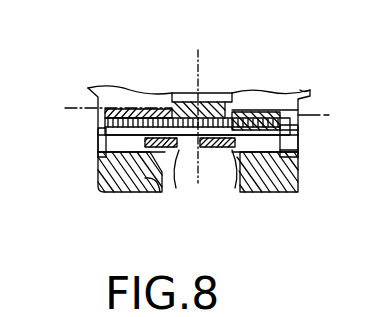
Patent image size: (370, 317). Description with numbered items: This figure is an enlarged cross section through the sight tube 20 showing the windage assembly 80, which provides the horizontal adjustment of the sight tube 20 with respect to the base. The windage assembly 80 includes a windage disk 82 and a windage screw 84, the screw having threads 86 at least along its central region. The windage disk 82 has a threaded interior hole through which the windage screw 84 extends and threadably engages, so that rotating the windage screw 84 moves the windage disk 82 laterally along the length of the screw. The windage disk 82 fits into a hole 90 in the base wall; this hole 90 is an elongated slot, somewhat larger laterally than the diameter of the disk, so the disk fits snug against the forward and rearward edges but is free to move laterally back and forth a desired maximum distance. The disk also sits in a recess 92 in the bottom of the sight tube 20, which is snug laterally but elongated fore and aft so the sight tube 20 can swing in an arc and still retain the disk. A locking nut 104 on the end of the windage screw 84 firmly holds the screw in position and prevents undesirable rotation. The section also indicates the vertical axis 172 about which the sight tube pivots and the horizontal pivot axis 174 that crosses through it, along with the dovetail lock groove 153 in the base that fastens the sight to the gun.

The windage assembly 80 is at (90, 152).
The sight tube 20 is at (310, 90).
The windage disk 82 is at (226, 108).
The recess 92 is at (165, 94).
The vertical axis 172 is at (199, 63).
The horizontal pivot axis 174 is at (320, 114).
The locking nut 104 is at (98, 127).
The windage screw 84 is at (300, 156).
The threads 86 is at (177, 186).
The hole 90 is at (235, 186).
The dovetail lock groove 153 is at (151, 193).